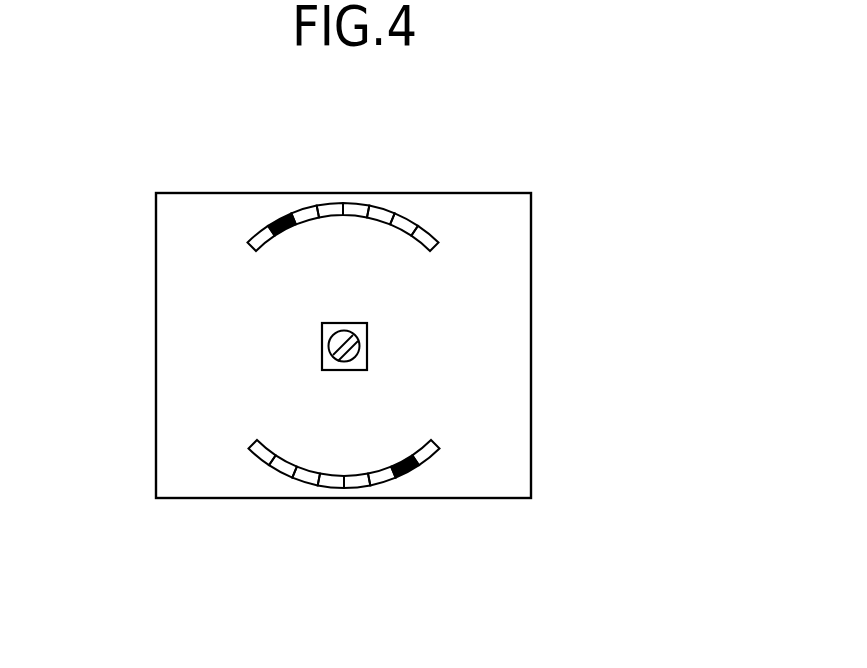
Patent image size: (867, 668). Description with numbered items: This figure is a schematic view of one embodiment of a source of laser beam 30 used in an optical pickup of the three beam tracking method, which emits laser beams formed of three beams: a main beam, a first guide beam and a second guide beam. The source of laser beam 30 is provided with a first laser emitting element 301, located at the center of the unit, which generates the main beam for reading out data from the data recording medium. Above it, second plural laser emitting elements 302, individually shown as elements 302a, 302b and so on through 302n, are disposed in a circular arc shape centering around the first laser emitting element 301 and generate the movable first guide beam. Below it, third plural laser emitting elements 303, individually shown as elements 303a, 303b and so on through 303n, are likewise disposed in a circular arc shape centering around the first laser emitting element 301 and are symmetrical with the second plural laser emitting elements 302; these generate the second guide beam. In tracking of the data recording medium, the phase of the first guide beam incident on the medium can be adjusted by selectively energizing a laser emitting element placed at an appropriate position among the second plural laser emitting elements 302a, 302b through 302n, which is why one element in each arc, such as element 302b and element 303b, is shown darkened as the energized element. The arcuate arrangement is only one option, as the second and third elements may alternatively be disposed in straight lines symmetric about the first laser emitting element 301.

The source of laser beam 30 is at (462, 166).
The first laser emitting element 301 is at (367, 336).
The second plural laser emitting elements 302 is at (290, 252).
The second plural laser emitting element 302a is at (262, 248).
The second plural laser emitting element 302b is at (293, 223).
The second plural laser emitting element 302n is at (427, 233).
The third plural laser emitting elements 303 is at (334, 466).
The third plural laser emitting element 303a is at (258, 443).
The third plural laser emitting element 303b is at (397, 463).
The third plural laser emitting element 303n is at (435, 447).